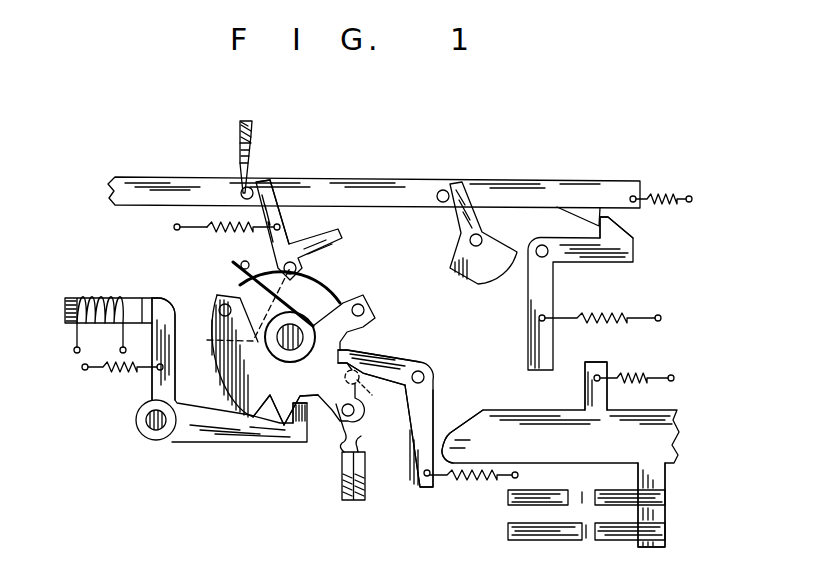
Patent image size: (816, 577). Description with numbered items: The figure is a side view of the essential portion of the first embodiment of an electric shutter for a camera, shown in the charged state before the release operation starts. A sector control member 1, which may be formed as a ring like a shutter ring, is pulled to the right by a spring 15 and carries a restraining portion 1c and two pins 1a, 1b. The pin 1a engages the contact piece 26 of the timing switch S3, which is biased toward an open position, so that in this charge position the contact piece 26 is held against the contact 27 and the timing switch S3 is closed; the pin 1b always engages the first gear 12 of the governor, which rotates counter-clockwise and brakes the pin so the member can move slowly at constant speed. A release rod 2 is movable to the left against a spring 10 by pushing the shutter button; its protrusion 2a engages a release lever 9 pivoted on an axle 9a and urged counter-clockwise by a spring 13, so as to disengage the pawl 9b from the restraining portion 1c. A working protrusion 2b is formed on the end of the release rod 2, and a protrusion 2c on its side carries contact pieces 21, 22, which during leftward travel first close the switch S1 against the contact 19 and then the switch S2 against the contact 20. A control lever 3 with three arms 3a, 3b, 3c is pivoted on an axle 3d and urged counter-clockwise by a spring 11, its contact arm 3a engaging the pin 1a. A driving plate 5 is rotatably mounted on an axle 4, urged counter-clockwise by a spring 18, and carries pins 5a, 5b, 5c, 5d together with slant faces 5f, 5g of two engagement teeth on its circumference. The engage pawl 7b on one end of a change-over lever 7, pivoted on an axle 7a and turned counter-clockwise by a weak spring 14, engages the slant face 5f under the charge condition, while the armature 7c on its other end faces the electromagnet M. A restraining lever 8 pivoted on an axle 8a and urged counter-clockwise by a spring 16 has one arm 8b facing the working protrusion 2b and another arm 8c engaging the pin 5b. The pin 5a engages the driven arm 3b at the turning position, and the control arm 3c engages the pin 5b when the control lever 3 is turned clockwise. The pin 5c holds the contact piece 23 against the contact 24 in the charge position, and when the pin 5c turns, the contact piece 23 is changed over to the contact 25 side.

The sector control member 1 is at (399, 192).
The pin 1a is at (255, 183).
The pin 1b is at (446, 190).
The restraining portion 1c is at (589, 214).
The release rod 2 is at (548, 418).
The protrusion 2a is at (605, 365).
The working protrusion 2b is at (450, 438).
The protrusion 2c is at (657, 482).
The control lever 3 is at (290, 243).
The contact arm 3a is at (272, 183).
The driven arm 3b is at (290, 215).
The control arm 3c is at (222, 343).
The axle 3d is at (297, 266).
The axle 4 is at (330, 296).
The driving plate 5 is at (240, 375).
The pin 5a is at (365, 310).
The pin 5b is at (359, 385).
The pin 5c is at (357, 415).
The pin 5d is at (222, 305).
The slant face 5f is at (298, 395).
The slant face 5g is at (243, 413).
The change-over lever 7 is at (172, 440).
The axle 7a is at (150, 420).
The engage pawl 7b is at (297, 412).
The armature 7c is at (155, 298).
The restraining lever 8 is at (418, 368).
The axle 8a is at (425, 377).
The arm 8b is at (427, 485).
The arm 8c is at (360, 353).
The release lever 9 is at (553, 282).
The axle 9a is at (542, 245).
The pawl 9b is at (612, 228).
The spring 10 is at (648, 377).
The spring 11 is at (210, 224).
The first gear 12 is at (462, 253).
The spring 13 is at (612, 316).
The weak spring 14 is at (90, 372).
The spring 15 is at (668, 195).
The spring 16 is at (470, 478).
The spring 18 is at (245, 268).
The contact 19 is at (522, 540).
The contact 20 is at (550, 490).
The contact piece 21 is at (620, 540).
The contact piece 22 is at (618, 490).
The contact piece 23 is at (346, 495).
The contact 24 is at (342, 420).
The contact 25 is at (360, 448).
The contact piece 26 is at (249, 165).
The contact 27 is at (240, 155).
The electromagnet M is at (87, 296).
The switch S1 is at (584, 540).
The switch S2 is at (582, 497).
The timing switch S3 is at (238, 128).